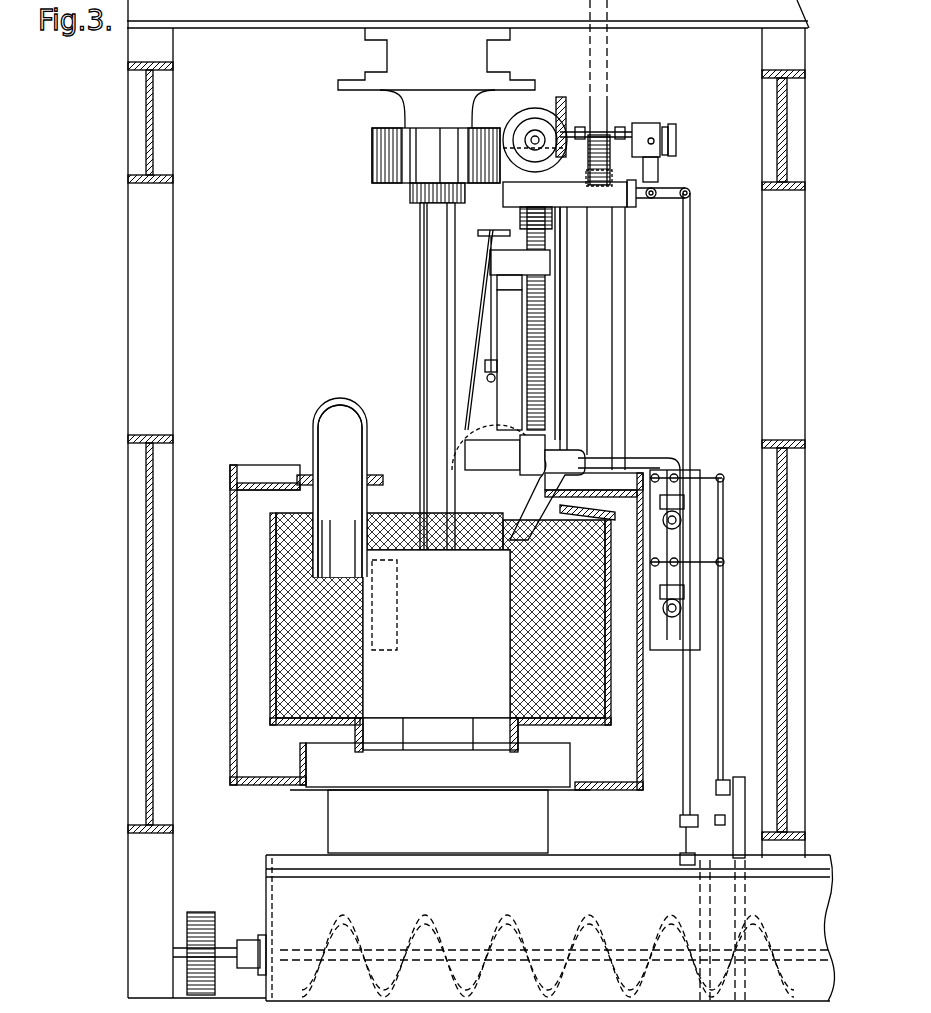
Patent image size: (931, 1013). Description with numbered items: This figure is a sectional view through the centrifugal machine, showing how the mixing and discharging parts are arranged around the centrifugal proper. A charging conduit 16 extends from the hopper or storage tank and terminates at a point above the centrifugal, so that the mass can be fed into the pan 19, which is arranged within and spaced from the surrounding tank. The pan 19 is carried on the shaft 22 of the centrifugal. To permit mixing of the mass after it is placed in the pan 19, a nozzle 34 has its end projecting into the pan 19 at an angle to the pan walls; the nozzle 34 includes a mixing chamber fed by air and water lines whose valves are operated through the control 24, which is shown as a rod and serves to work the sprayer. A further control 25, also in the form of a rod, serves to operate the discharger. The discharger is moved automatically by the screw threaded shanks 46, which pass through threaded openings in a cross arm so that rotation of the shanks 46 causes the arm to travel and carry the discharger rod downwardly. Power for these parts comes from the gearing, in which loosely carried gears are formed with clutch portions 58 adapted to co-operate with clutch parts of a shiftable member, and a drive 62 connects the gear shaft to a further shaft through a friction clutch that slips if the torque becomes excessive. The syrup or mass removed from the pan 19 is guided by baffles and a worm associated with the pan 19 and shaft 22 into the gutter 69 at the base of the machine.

The charging conduit 16 is at (360, 437).
The pan 19 is at (598, 646).
The shaft 22 is at (420, 297).
The control 24 is at (718, 692).
The control 25 is at (683, 737).
The nozzle 34 is at (548, 512).
The screw threaded shank 46 is at (546, 330).
The clutch portion 58 is at (605, 72).
The drive 62 is at (562, 366).
The gutter 69 is at (504, 928).